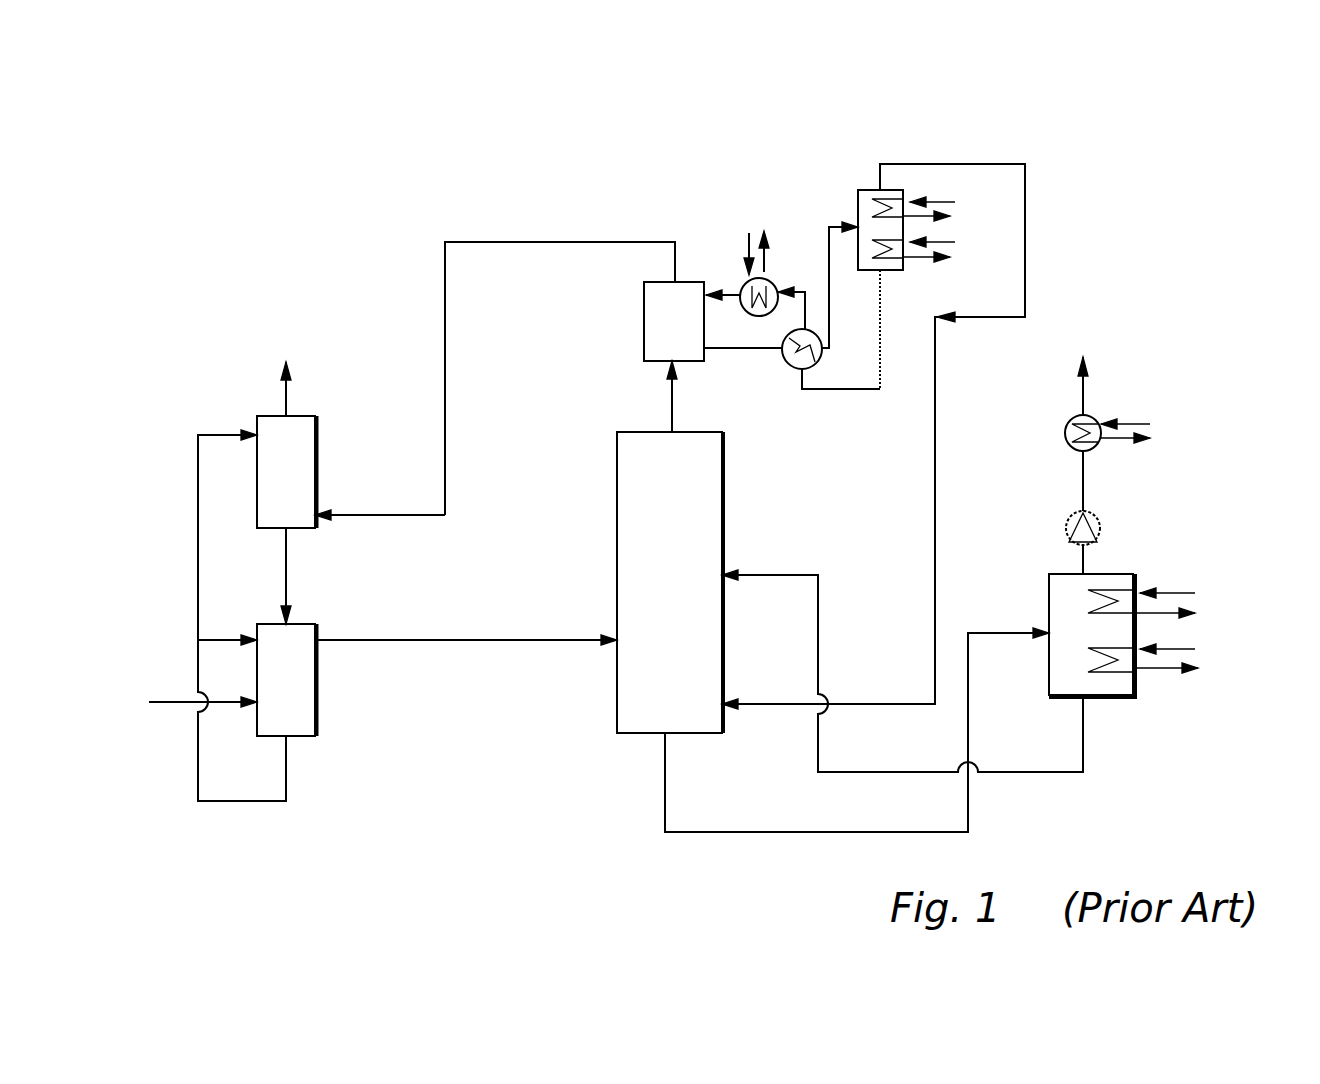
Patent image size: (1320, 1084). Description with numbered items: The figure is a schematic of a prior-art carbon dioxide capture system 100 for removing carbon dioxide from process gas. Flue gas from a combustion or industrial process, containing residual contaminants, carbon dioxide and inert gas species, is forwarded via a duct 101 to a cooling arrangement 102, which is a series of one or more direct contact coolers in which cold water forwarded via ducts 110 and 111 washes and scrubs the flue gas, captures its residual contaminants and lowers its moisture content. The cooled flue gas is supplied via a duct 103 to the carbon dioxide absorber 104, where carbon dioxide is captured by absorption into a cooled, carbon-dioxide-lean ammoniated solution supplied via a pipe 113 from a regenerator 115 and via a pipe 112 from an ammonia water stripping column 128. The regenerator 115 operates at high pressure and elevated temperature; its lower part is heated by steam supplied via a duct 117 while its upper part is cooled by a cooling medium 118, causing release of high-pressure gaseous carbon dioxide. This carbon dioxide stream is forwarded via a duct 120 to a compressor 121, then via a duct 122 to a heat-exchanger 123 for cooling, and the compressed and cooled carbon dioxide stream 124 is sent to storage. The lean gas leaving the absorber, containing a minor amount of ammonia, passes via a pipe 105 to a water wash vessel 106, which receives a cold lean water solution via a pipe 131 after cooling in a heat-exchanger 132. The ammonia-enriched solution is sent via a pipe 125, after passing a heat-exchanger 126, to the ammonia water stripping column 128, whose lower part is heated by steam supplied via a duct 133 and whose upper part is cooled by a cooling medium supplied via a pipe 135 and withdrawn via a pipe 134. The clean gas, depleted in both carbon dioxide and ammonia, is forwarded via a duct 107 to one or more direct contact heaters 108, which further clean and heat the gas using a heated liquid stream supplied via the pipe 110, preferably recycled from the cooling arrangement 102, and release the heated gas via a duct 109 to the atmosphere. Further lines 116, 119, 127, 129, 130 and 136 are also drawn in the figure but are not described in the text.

The carbon dioxide capture system 100 is at (250, 220).
The duct 101 is at (212, 705).
The cooling arrangement 102 is at (300, 702).
The duct 103 is at (445, 640).
The CO2 absorber 104 is at (625, 705).
The pipe 105 is at (672, 408).
The water wash vessel 106 is at (656, 305).
The duct 107 is at (445, 300).
The direct contact heater 108 is at (305, 472).
The duct 109 is at (289, 398).
The duct 110 is at (198, 578).
The duct 111 is at (290, 573).
The pipe 112 is at (768, 703).
The pipe 113 is at (782, 575).
The regenerator 115 is at (1055, 597).
The cooling medium outlet 116 is at (1165, 672).
The duct 117 is at (1182, 650).
The cooling medium 118 is at (1182, 592).
The heating medium outlet 119 is at (1165, 616).
The duct 120 is at (1087, 562).
The compressor 121 is at (1100, 520).
The duct 122 is at (1087, 477).
The heat-exchanger 123 is at (1065, 433).
The compressed and cooled CO2 stream 124 is at (745, 835).
The pipe 125 is at (735, 350).
The heat-exchanger 126 is at (790, 370).
The heated stream 127 is at (828, 240).
The ammonia water stripping column 128 is at (863, 203).
The cooled stream line 129 is at (853, 392).
The chiller 130 is at (797, 288).
The pipe 131 is at (731, 297).
The heat-exchanger 132 is at (745, 285).
The duct 133 is at (952, 240).
The pipe 134 is at (933, 260).
The pipe 135 is at (935, 200).
The medium inlet 136 is at (932, 222).